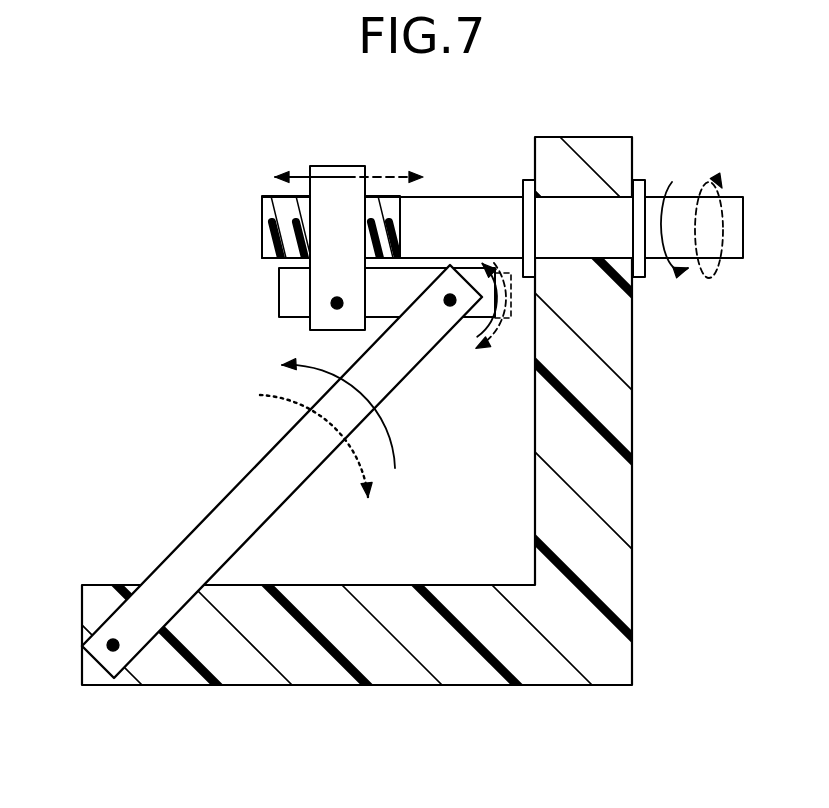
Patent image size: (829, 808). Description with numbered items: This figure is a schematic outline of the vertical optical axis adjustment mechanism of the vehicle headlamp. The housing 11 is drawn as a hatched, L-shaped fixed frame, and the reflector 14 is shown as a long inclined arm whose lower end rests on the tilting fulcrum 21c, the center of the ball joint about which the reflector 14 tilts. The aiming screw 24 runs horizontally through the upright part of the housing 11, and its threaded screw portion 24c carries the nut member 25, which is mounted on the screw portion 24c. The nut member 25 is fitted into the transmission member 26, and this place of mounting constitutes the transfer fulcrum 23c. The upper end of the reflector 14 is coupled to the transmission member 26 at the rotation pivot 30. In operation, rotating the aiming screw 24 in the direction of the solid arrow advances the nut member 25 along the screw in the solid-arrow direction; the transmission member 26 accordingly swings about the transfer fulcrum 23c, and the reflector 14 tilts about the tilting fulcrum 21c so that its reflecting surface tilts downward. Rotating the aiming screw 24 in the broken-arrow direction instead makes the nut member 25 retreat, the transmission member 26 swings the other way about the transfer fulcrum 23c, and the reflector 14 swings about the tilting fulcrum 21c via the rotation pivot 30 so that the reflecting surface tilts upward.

The housing 11 is at (633, 430).
The reflector 14 is at (252, 470).
The tilting fulcrum 21c is at (113, 645).
The transfer fulcrum 23c is at (337, 303).
The aiming screw 24 is at (732, 205).
The screw portion 24c is at (264, 229).
The nut member 25 is at (342, 178).
The transmission member 26 is at (278, 307).
The rotation pivot 30 is at (450, 302).